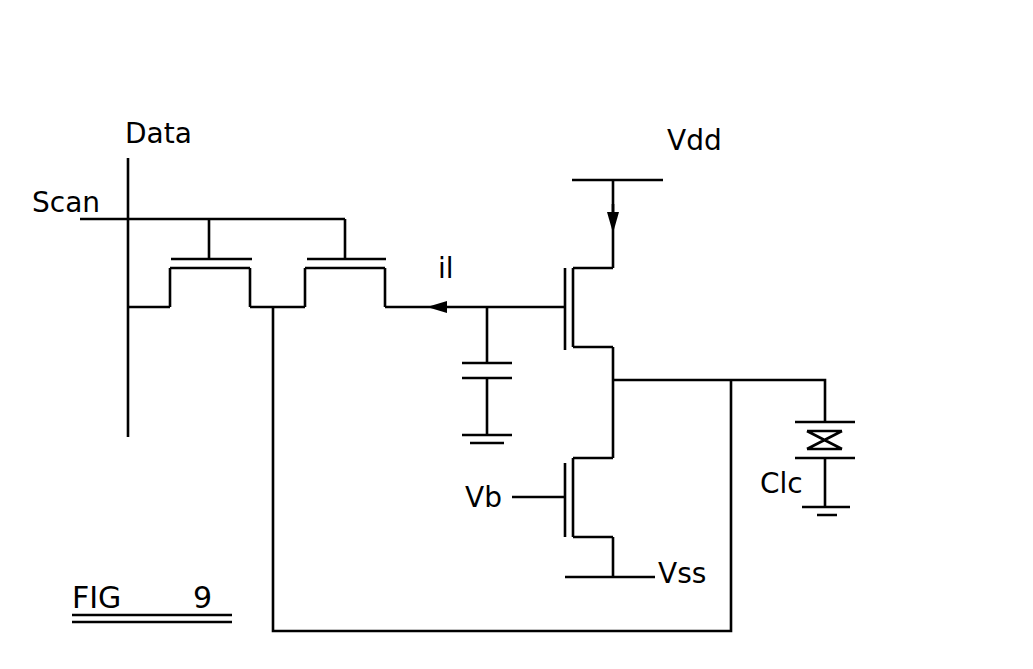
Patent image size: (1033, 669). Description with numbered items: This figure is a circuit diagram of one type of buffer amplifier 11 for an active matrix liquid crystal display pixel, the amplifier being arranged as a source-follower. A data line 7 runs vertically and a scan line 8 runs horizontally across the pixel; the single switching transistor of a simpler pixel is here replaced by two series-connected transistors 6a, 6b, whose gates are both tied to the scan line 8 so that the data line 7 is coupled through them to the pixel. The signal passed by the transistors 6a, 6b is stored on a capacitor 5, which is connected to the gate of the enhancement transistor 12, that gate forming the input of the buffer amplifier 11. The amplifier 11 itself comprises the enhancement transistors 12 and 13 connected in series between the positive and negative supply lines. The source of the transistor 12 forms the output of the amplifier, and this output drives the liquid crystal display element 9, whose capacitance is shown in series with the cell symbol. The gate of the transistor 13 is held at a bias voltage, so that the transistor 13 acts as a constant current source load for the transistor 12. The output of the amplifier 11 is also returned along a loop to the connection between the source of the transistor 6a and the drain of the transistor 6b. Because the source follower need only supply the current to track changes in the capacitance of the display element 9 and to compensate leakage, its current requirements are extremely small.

The data line 7 is at (128, 187).
The scan line 8 is at (173, 219).
The transistor 6a is at (205, 269).
The transistor 6b is at (367, 260).
The capacitor 5 is at (470, 378).
The buffer amplifier 11 is at (627, 116).
The enhancement transistor 12 is at (565, 280).
The enhancement transistor 13 is at (562, 522).
The liquid crystal display element 9 is at (843, 421).